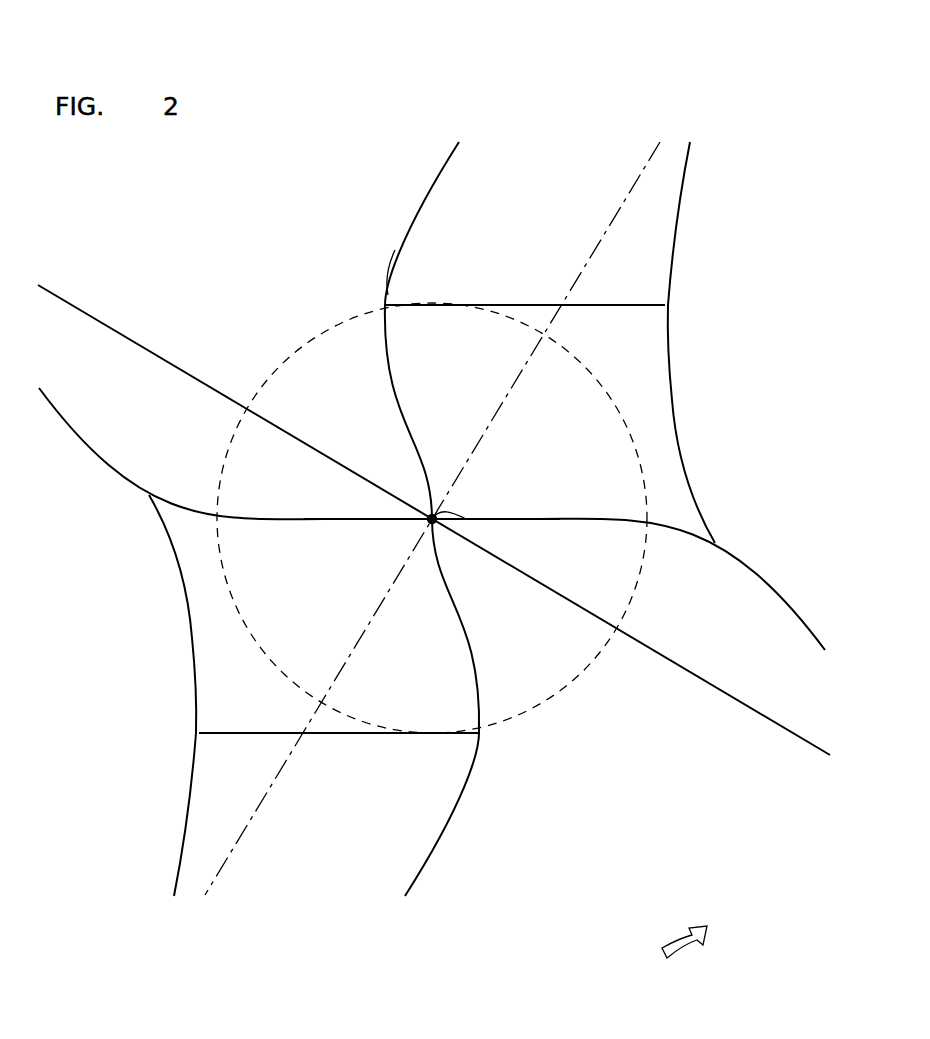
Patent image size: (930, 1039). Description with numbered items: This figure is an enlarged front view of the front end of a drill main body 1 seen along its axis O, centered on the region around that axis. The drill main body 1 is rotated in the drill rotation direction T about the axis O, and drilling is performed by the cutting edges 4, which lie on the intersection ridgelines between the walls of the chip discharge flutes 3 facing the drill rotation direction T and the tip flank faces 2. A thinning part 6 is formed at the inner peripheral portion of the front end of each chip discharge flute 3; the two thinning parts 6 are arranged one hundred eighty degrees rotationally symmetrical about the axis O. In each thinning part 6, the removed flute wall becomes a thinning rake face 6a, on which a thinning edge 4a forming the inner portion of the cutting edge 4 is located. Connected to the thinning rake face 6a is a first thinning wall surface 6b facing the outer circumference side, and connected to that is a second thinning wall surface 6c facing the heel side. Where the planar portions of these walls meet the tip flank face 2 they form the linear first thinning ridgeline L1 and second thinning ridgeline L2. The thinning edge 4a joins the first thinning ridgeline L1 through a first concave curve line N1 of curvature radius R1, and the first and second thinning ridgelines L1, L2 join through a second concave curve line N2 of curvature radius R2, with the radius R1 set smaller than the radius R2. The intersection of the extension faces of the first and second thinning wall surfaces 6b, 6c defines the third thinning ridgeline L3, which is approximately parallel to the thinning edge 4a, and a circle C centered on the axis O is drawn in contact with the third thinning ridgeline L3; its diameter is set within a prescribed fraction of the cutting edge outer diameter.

The drill main body 1 is at (533, 844).
The tip flank face 2 is at (76, 328).
The chip discharge flute 3 is at (780, 475).
The cutting edge 4 is at (782, 597).
The thinning edge 4a is at (574, 518).
The thinning part 6 is at (806, 282).
The thinning rake face 6a is at (615, 497).
The first thinning wall surface 6b is at (644, 366).
The second thinning wall surface 6c is at (650, 243).
The first thinning ridgeline L1 is at (429, 519).
The second thinning ridgeline L2 is at (415, 527).
The third thinning ridgeline L3 is at (535, 303).
The first concave curve line N1 is at (433, 502).
The second concave curve line N2 is at (397, 253).
The curvature radius of the first concave curve line R1 is at (455, 504).
The curvature radius of the second concave curve line R2 is at (395, 273).
The axis O is at (415, 535).
The circle C is at (572, 683).
The drill rotation direction T is at (684, 956).